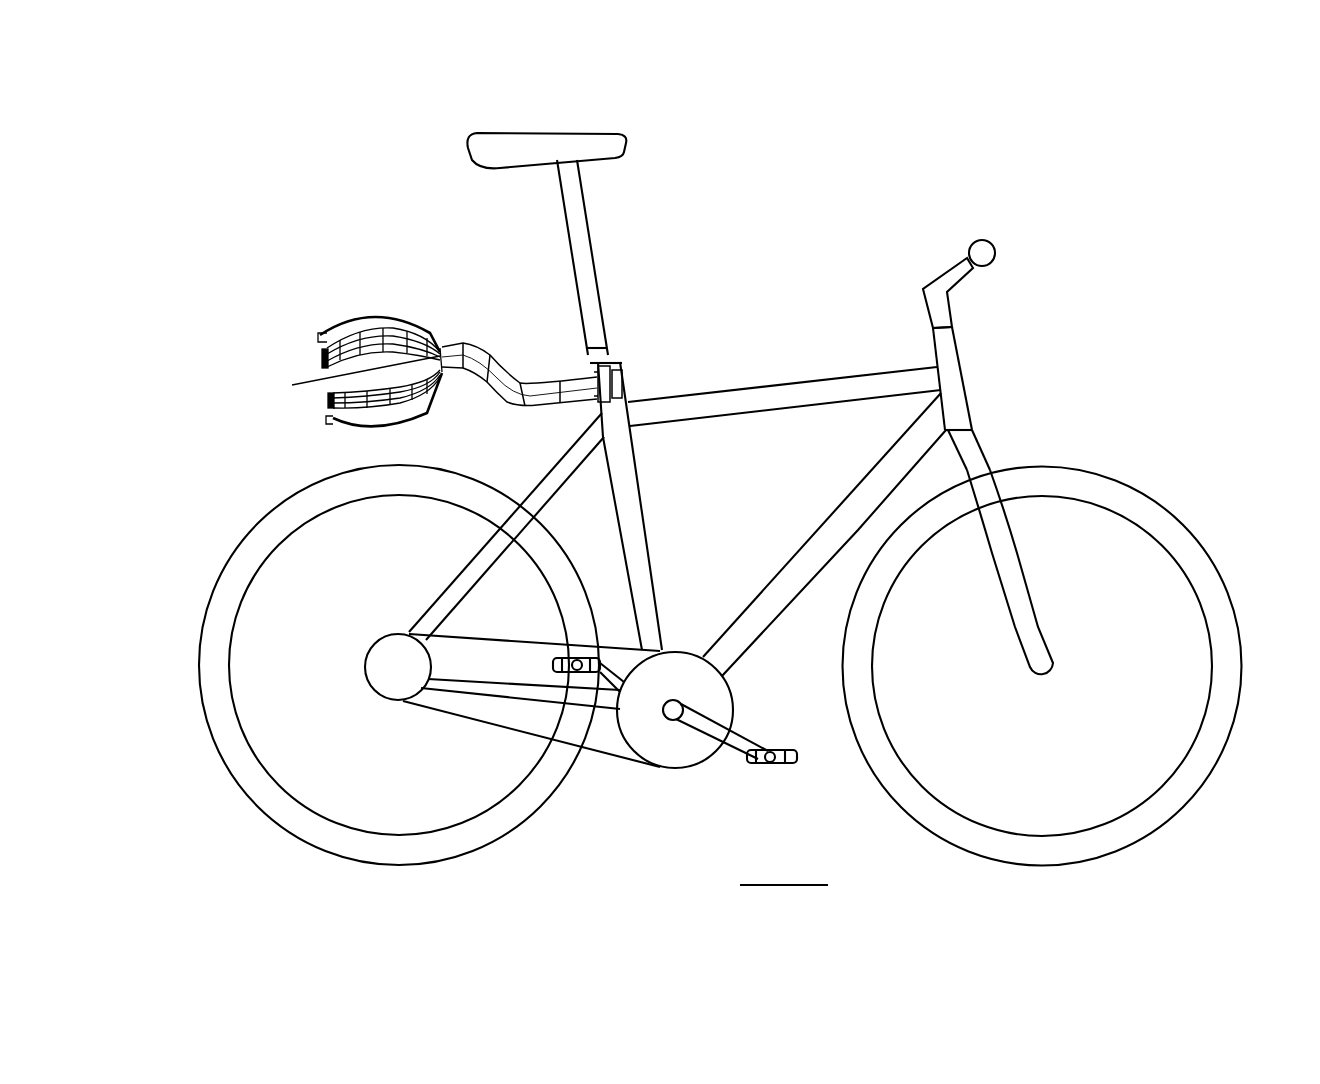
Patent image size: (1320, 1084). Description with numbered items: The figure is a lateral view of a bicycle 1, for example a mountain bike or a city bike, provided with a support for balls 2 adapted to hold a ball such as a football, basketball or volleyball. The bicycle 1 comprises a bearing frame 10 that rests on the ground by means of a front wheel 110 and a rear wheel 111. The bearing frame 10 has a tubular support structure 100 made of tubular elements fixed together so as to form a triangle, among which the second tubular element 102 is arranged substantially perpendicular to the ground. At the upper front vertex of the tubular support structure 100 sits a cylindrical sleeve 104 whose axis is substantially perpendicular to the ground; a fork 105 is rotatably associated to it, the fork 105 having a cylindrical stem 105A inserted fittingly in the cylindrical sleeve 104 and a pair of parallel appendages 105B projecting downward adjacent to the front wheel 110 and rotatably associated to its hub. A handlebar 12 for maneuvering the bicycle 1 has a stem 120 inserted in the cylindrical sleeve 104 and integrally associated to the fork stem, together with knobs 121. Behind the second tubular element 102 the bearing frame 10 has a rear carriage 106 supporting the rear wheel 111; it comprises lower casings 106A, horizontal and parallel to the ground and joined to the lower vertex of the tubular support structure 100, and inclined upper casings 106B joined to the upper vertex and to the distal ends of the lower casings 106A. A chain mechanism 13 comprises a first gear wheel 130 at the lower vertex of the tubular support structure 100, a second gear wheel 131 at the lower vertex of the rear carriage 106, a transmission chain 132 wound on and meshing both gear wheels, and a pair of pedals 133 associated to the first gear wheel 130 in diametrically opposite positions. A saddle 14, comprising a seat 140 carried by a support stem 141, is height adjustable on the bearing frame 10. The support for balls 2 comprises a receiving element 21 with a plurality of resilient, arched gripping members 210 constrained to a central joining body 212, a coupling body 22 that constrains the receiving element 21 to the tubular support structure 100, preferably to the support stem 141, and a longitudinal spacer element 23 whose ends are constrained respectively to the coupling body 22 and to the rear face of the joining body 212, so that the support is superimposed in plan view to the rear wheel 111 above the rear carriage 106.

The bicycle 1 is at (699, 503).
The support for balls 2 is at (434, 300).
The bearing frame 10 is at (699, 508).
The handlebar 12 is at (930, 282).
The chain mechanism 13 is at (582, 745).
The saddle 14 is at (507, 221).
The receiving element 21 is at (300, 315).
The coupling body 22 is at (652, 322).
The longitudinal spacer element 23 is at (513, 297).
The tubular support structure 100 is at (663, 526).
The second tubular element 102 is at (622, 402).
The cylindrical sleeve 104 is at (948, 363).
The fork 105 is at (1079, 505).
The cylindrical stem 105A is at (975, 430).
The parallel appendages 105B is at (1002, 557).
The rear carriage 106 is at (450, 605).
The lower casings 106A is at (528, 482).
The upper casings 106B is at (490, 712).
The front wheel 110 is at (1200, 775).
The rear wheel 111 is at (263, 778).
The stem 120 is at (942, 318).
The knobs 121 is at (982, 255).
The first gear wheel 130 is at (700, 767).
The second gear wheel 131 is at (378, 677).
The transmission chain 132 is at (588, 745).
The pedals 133 is at (548, 662).
The seat 140 is at (545, 140).
The support stem 141 is at (583, 220).
The gripping members 210 is at (327, 313).
The joining body 212 is at (407, 350).